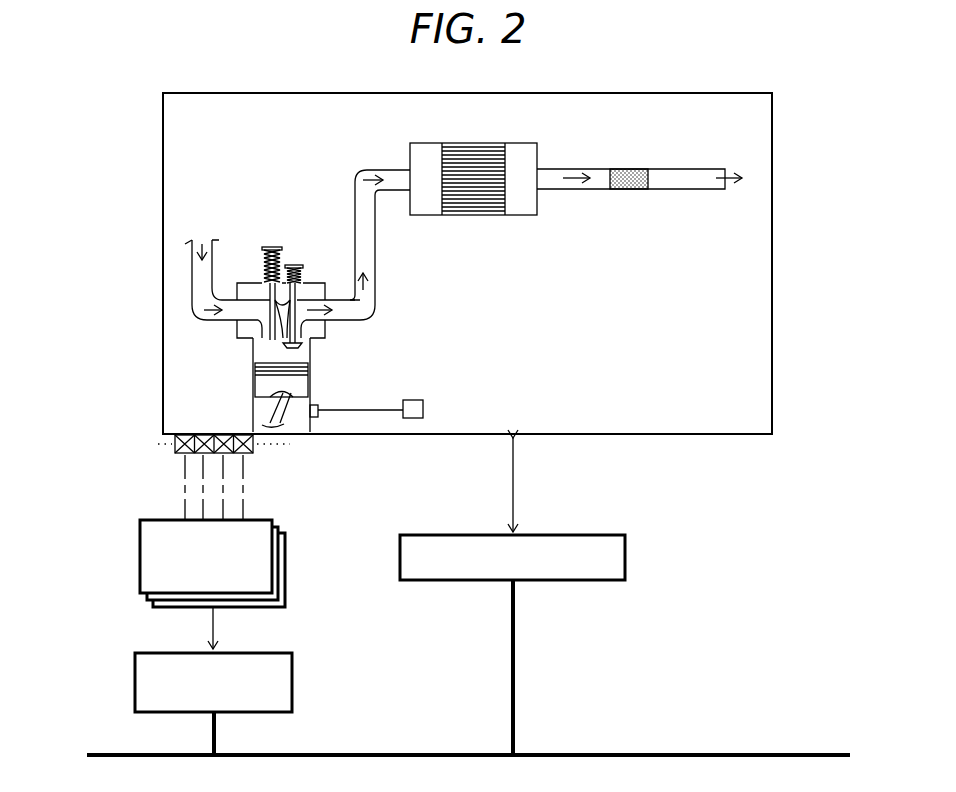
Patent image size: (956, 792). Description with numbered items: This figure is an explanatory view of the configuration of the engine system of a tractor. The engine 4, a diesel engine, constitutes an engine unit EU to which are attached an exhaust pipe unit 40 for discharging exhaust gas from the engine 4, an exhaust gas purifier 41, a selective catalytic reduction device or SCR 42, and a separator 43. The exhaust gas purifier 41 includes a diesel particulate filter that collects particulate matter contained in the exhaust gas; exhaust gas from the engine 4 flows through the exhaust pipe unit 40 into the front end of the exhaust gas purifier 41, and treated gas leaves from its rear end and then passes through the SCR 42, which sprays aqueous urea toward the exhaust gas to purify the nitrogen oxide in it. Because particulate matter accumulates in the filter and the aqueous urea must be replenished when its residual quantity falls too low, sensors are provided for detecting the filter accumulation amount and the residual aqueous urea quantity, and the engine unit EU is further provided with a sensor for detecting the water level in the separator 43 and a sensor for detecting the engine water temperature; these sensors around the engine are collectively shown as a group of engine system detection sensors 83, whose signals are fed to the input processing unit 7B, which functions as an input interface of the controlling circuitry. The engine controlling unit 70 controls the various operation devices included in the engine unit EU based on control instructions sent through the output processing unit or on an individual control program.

The engine 4 is at (261, 173).
The exhaust pipe unit 40 is at (385, 257).
The exhaust gas purifier 41 is at (513, 226).
The selective catalytic reduction (SCR) 42 is at (630, 168).
The separator 43 is at (423, 409).
The group of engine system detection sensors 83 is at (140, 550).
The engine controlling unit 70 is at (627, 557).
The input processing unit 7B is at (135, 678).
The engine unit EU is at (772, 415).